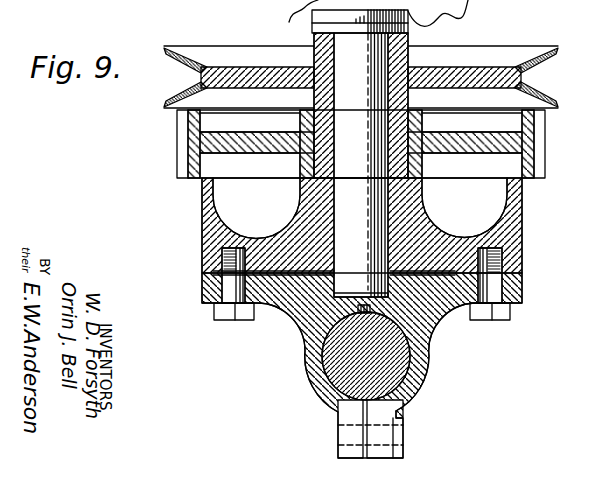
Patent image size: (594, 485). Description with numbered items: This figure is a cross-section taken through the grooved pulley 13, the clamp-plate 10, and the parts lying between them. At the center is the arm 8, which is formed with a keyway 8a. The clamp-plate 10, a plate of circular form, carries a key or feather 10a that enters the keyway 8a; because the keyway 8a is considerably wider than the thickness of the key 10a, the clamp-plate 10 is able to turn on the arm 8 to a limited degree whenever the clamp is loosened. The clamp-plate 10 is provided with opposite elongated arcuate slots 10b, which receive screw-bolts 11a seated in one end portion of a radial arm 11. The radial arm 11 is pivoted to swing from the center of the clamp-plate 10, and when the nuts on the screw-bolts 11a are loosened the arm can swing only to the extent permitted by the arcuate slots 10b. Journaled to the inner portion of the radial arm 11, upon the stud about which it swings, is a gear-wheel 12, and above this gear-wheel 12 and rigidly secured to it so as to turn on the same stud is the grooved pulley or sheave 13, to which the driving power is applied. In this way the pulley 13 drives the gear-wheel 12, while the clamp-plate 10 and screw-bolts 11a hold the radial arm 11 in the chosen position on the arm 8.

The arm 8 is at (335, 385).
The keyway 8a is at (348, 390).
The clamp-plate 10 is at (354, 318).
The key or feather 10a is at (330, 364).
The arcuate slots 10b is at (540, 283).
The radial arm 11 is at (360, 208).
The screw-bolts 11a is at (497, 330).
The gear-wheel 12 is at (361, 142).
The grooved pulley or sheave 13 is at (475, 51).